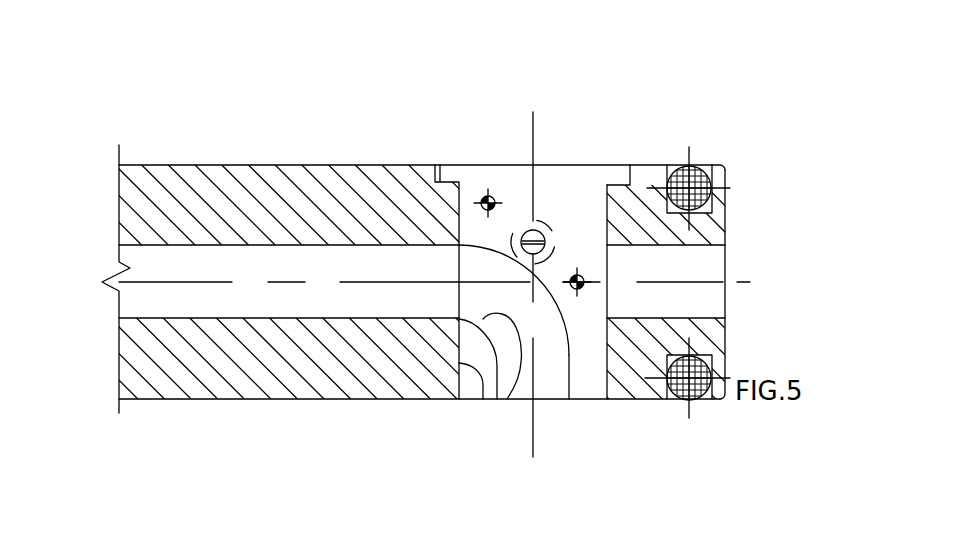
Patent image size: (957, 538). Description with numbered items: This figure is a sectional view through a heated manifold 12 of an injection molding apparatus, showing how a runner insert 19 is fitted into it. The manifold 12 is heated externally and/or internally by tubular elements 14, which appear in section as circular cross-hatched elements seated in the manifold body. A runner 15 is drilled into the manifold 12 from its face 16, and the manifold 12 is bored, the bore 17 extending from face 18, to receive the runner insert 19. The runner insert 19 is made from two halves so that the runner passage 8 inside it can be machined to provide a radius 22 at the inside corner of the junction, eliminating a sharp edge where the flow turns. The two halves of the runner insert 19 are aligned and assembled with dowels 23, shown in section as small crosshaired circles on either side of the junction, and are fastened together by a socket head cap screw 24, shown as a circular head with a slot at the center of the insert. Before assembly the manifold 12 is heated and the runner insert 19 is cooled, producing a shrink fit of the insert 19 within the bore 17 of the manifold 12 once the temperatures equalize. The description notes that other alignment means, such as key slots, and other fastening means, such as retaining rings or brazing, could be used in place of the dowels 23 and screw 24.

The runner passage 8 is at (553, 388).
The manifold 12 is at (391, 231).
The tubular elements 14 is at (689, 166).
The runner 15 is at (119, 306).
The face 16 is at (727, 218).
The bore 17 is at (483, 399).
The face 18 is at (357, 165).
The runner insert 19 is at (547, 180).
The radius 22 is at (507, 399).
The dowels 23 is at (484, 196).
The socket head cap screw 24 is at (527, 231).